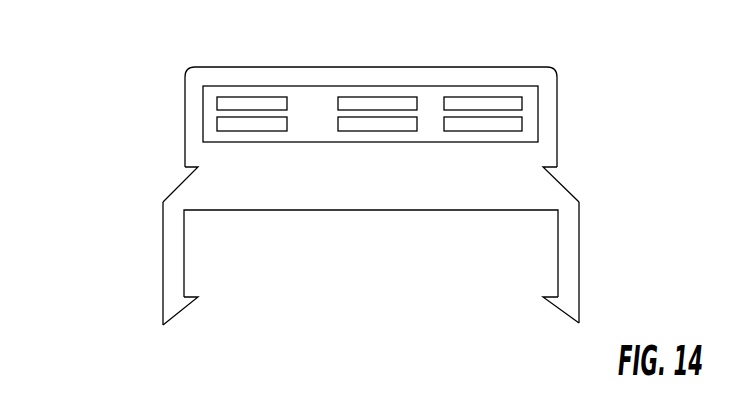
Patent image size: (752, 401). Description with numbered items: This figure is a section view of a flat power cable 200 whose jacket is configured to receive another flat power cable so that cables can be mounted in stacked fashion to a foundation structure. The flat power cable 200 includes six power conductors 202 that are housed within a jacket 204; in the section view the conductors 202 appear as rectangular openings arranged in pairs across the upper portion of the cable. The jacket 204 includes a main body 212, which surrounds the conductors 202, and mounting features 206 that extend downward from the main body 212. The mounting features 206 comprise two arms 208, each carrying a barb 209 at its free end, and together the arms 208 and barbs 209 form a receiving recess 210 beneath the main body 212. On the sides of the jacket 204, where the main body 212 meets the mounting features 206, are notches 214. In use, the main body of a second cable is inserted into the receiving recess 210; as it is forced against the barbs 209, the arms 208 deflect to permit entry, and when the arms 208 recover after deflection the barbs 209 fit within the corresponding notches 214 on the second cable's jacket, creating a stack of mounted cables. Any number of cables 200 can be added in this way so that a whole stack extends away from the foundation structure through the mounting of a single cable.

The flat power cable 200 is at (347, 211).
The power conductors 202 is at (499, 126).
The jacket 204 is at (548, 117).
The mounting features 206 is at (334, 265).
The arms 208 is at (167, 282).
The barbs 209 is at (177, 303).
The receiving recess 210 is at (367, 323).
The main body 212 is at (190, 103).
The notches 214 is at (196, 168).